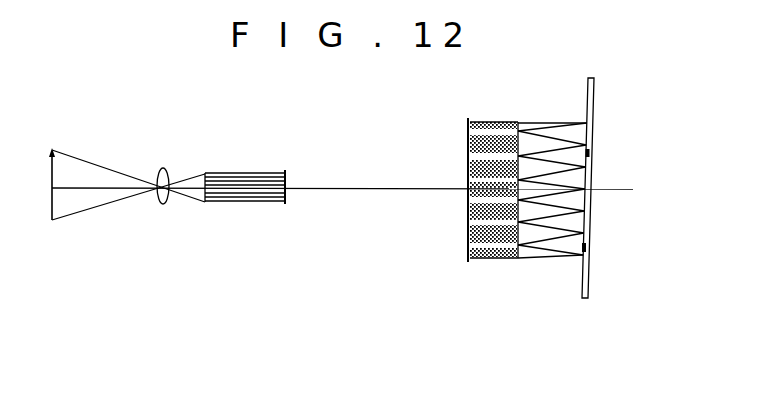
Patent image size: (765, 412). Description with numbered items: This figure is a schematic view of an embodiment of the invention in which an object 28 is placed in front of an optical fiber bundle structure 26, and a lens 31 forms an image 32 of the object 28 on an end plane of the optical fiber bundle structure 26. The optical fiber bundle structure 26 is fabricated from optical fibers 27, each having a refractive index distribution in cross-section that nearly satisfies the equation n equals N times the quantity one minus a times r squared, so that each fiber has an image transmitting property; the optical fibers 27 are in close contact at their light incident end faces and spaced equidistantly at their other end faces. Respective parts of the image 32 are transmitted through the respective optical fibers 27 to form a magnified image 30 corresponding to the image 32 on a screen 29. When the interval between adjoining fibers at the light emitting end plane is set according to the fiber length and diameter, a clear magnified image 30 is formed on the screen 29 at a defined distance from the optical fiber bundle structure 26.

The optical fiber bundle structure 26 is at (497, 261).
The optical fibers 27 is at (258, 202).
The object 28 is at (50, 207).
The screen 29 is at (593, 97).
The magnified image 30 is at (591, 156).
The lens 31 is at (163, 205).
The image 32 is at (200, 195).